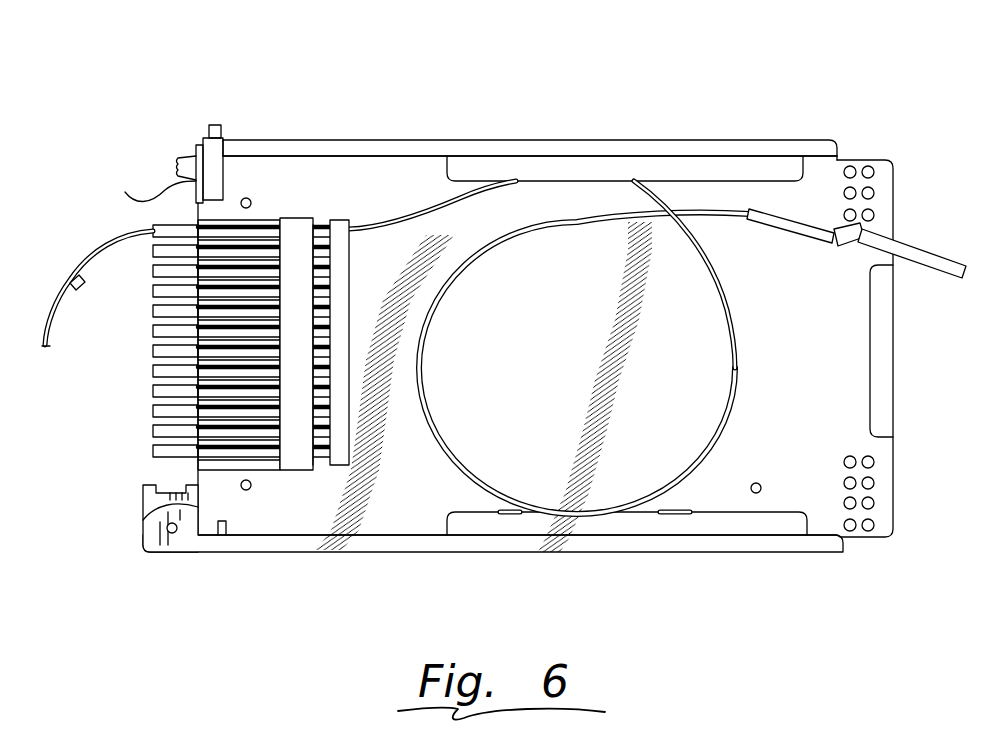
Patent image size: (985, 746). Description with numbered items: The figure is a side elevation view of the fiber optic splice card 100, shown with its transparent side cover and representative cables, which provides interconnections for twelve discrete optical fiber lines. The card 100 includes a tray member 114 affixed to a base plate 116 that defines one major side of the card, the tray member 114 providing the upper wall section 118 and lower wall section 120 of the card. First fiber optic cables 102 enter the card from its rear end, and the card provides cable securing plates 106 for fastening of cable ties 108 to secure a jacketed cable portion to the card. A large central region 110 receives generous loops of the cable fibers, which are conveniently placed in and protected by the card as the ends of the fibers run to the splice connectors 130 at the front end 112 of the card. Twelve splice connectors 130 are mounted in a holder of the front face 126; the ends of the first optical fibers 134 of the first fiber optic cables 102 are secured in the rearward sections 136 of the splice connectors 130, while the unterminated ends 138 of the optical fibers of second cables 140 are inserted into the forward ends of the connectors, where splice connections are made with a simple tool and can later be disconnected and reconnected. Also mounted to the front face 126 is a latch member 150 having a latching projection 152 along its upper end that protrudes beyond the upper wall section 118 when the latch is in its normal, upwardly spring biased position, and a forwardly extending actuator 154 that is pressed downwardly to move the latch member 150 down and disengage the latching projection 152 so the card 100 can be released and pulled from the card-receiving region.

The fiber optic splice card 100 is at (423, 93).
The first fiber optic cables 102 is at (928, 258).
The cable securing plates 106 is at (856, 255).
The cable ties 108 is at (833, 240).
The central region 110 is at (683, 378).
The front end 112 is at (178, 327).
The tray member 114 is at (808, 197).
The base plate 116 is at (703, 156).
The upper wall section 118 is at (582, 158).
The lower wall section 120 is at (407, 534).
The front face 126 is at (150, 520).
The splice connectors 130 is at (140, 375).
The first optical fibers 134 is at (372, 228).
The rearward sections 136 is at (320, 266).
The unterminated ends 138 is at (130, 236).
The second cables 140 is at (55, 342).
The latch member 150 is at (139, 187).
The latching projection 152 is at (214, 124).
The actuator 154 is at (175, 165).